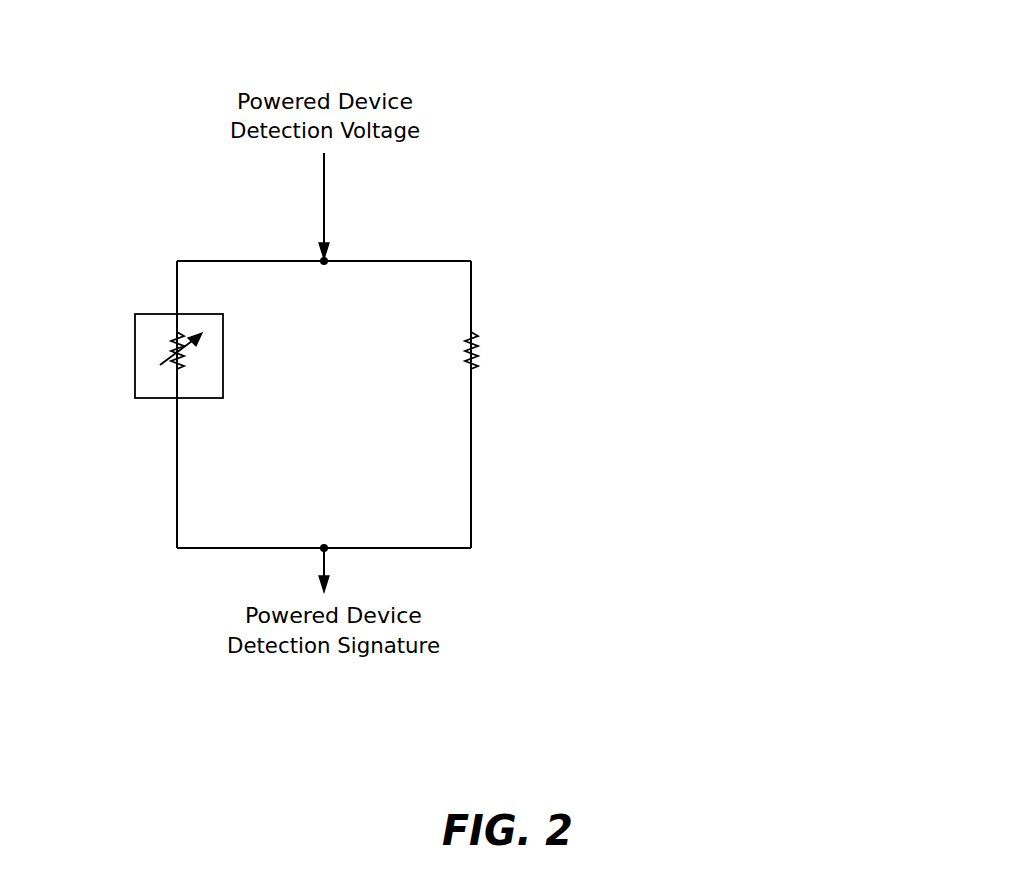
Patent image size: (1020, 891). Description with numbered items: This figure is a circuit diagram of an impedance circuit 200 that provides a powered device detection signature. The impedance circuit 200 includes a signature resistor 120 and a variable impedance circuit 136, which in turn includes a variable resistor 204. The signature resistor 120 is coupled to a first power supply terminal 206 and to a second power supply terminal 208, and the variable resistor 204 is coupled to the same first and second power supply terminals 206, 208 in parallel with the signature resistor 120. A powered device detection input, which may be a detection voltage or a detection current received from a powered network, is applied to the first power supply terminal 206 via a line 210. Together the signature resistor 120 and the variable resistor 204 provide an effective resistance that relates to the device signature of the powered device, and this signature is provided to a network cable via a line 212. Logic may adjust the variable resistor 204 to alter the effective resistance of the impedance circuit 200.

The impedance circuit 200 is at (543, 111).
The signature resistor 120 is at (477, 347).
The variable impedance circuit 136 is at (135, 363).
The variable resistor 204 is at (176, 332).
The first power supply terminal 206 is at (248, 261).
The second power supply terminal 208 is at (250, 548).
The line 210 is at (324, 203).
The line 212 is at (326, 565).